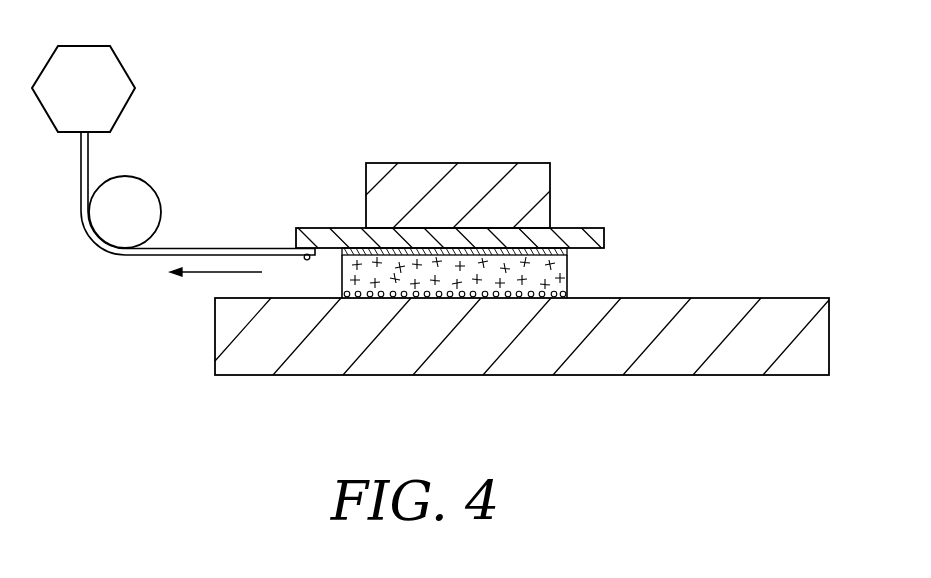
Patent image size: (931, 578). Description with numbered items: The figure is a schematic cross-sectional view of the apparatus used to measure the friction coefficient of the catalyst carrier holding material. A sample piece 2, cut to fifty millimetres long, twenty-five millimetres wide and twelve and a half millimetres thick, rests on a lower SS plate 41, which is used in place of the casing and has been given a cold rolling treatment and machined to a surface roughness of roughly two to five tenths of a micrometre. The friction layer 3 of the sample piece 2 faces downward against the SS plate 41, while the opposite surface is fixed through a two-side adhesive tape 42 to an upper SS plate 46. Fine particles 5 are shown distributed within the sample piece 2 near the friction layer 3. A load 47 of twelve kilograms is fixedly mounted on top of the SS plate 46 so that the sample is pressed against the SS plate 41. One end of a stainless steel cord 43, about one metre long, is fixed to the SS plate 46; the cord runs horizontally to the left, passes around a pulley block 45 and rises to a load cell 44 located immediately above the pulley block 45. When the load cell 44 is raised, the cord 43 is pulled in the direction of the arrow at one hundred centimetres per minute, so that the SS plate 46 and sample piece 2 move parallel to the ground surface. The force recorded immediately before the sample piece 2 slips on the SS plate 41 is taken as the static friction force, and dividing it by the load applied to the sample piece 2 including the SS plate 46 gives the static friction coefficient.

The sample piece 2 is at (550, 276).
The friction layer 3 is at (580, 293).
The particles 5 is at (483, 300).
The SS plate 41 is at (783, 313).
The two-side adhesive tape 42 is at (567, 250).
The stainless steel cord 43 is at (228, 250).
The load cell 44 is at (108, 73).
The pulley block 45 is at (135, 195).
The SS plate 46 is at (590, 232).
The load 47 is at (530, 173).